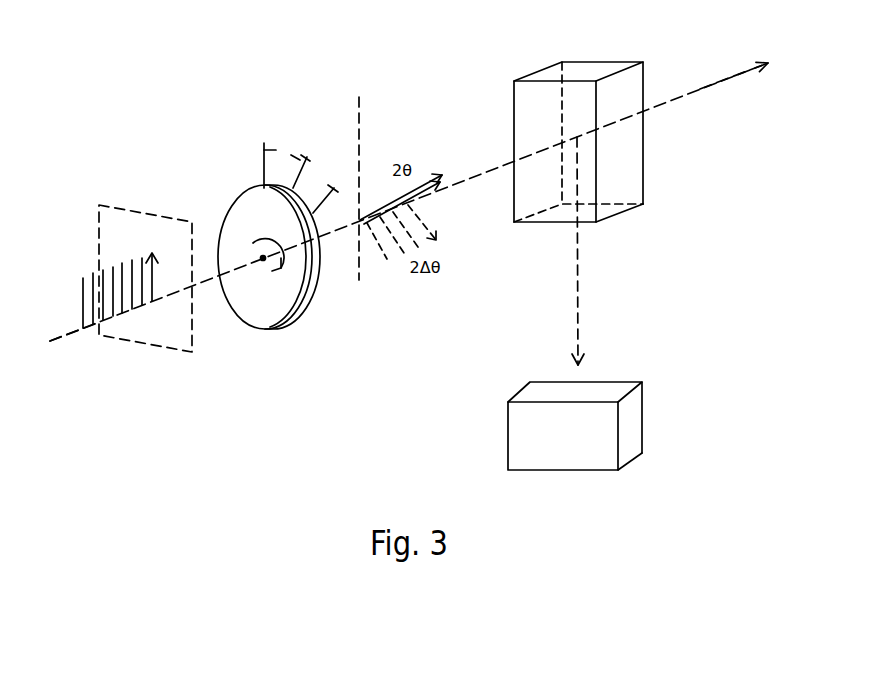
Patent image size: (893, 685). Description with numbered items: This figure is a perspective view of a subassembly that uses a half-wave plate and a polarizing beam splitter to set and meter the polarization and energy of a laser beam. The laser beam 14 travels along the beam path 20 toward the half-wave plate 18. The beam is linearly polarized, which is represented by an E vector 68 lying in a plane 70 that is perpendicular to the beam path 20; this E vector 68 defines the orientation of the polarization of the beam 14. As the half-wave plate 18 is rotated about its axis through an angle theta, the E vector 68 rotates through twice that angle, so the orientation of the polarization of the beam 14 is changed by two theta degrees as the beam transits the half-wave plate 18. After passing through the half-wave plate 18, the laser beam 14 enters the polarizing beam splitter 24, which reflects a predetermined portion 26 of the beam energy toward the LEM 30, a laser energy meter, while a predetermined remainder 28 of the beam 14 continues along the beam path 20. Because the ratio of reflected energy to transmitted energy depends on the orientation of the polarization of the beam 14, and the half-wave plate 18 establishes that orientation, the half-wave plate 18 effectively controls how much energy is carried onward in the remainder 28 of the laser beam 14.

The laser beam 14 is at (72, 333).
The half-wave plate 18 is at (265, 322).
The beam path 20 is at (685, 97).
The polarizing beam splitter 24 is at (590, 68).
The reflected portion 26 is at (578, 288).
The transmitted remainder 28 is at (727, 78).
The LEM 30 is at (635, 413).
The E vector 68 is at (153, 258).
The plane 70 is at (145, 213).